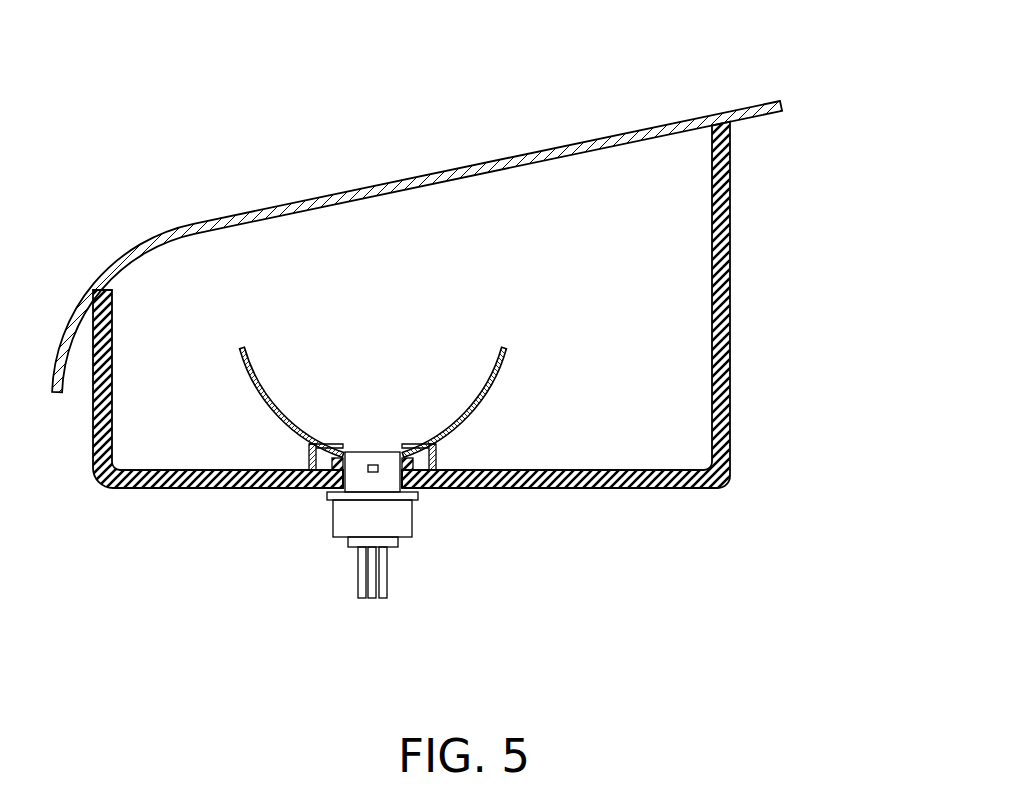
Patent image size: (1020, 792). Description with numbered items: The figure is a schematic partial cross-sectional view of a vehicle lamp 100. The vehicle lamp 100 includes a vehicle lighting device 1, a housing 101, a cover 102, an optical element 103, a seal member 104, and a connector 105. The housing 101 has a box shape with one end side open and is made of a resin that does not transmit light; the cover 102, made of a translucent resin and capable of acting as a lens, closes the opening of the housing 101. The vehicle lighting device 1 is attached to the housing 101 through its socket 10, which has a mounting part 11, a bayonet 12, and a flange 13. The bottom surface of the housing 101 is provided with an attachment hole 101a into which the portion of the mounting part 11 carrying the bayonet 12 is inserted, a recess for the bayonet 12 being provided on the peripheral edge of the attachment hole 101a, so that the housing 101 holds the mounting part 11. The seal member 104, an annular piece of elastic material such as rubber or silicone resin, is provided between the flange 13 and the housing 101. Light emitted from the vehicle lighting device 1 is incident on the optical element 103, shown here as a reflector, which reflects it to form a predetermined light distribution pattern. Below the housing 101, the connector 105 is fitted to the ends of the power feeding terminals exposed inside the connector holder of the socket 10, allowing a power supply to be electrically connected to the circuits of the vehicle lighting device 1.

The vehicle lighting device 1 is at (424, 476).
The socket 10 is at (424, 511).
The mounting part 11 is at (380, 453).
The bayonet 12 is at (345, 465).
The flange 13 is at (340, 497).
The vehicle lamp 100 is at (486, 345).
The housing 101 is at (728, 365).
The attachment hole 101a is at (399, 482).
The cover 102 is at (277, 207).
The optical element 103 is at (263, 400).
The seal member 104 is at (340, 490).
The connector 105 is at (399, 546).